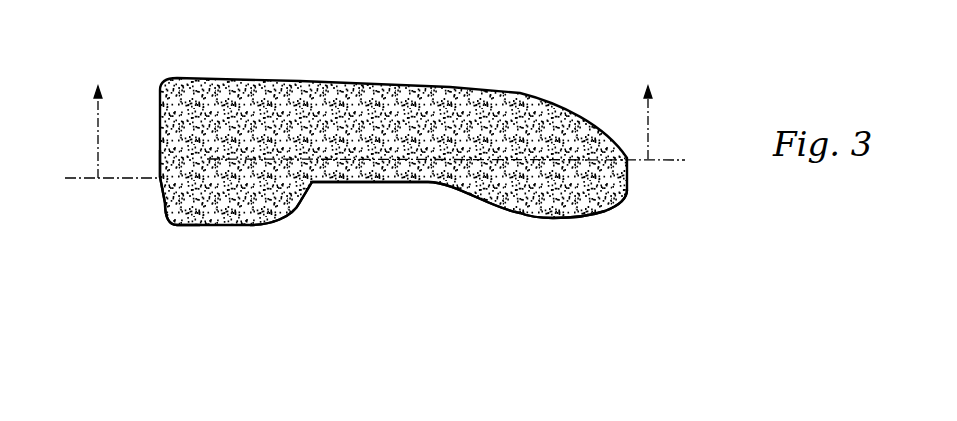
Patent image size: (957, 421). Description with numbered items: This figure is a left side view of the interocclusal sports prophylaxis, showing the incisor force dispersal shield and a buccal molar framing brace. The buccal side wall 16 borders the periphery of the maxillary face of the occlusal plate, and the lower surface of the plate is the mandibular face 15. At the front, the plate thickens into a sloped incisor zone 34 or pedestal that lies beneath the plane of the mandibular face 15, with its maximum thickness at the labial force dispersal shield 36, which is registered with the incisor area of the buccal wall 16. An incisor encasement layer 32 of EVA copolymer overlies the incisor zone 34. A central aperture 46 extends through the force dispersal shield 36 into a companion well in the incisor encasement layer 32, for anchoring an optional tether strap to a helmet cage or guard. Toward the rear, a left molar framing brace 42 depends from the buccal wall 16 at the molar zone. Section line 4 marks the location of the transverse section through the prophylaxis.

The buccal side wall 16 is at (335, 97).
The section line 4- 4 is at (375, 106).
The central aperture 46 is at (153, 179).
The labial force dispersal shield 36 is at (165, 205).
The incisor encasement layer 32 is at (347, 182).
The thickened incisor zone 34 is at (347, 182).
The mandibular face 15 is at (428, 182).
The left molar framing brace 42 is at (573, 198).